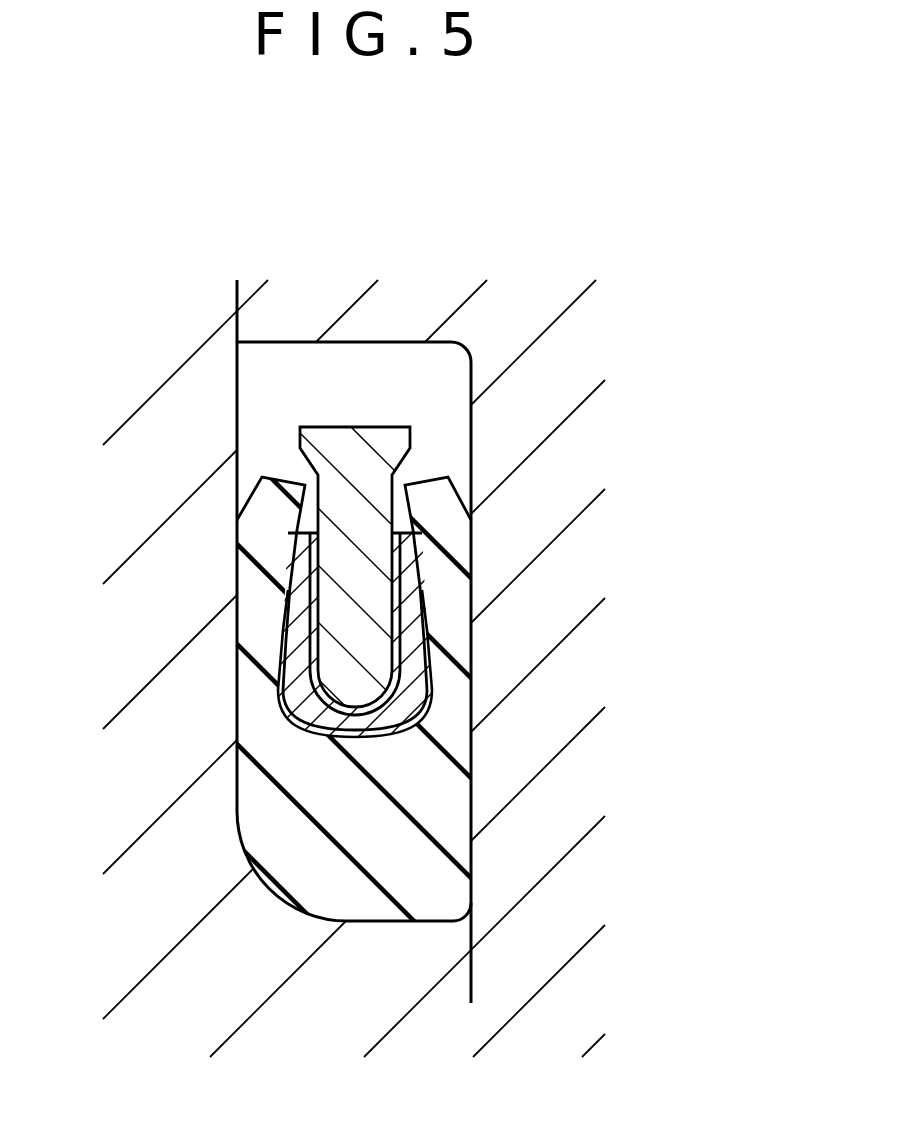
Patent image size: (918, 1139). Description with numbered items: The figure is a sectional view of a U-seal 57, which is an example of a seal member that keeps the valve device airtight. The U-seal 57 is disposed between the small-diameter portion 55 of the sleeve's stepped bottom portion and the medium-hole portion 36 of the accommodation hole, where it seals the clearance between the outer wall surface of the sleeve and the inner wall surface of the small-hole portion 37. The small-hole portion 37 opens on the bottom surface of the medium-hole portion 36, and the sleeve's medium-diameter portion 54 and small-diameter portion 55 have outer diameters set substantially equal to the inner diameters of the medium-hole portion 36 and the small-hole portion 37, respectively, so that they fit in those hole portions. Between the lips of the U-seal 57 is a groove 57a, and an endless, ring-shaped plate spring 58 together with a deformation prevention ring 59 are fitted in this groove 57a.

The medium-hole portion 36 is at (243, 707).
The small-hole portion 37 is at (478, 986).
The medium-diameter portion 54 is at (268, 301).
The small-diameter portion 55 is at (552, 688).
The U-seal 57 is at (446, 858).
The groove 57a is at (290, 648).
The plate spring 58 is at (303, 561).
The deformation prevention ring 59 is at (333, 427).